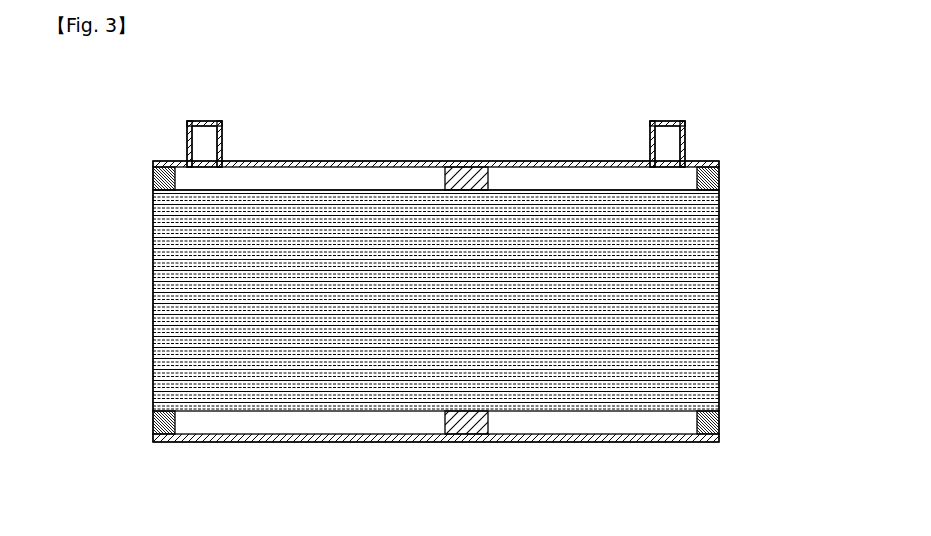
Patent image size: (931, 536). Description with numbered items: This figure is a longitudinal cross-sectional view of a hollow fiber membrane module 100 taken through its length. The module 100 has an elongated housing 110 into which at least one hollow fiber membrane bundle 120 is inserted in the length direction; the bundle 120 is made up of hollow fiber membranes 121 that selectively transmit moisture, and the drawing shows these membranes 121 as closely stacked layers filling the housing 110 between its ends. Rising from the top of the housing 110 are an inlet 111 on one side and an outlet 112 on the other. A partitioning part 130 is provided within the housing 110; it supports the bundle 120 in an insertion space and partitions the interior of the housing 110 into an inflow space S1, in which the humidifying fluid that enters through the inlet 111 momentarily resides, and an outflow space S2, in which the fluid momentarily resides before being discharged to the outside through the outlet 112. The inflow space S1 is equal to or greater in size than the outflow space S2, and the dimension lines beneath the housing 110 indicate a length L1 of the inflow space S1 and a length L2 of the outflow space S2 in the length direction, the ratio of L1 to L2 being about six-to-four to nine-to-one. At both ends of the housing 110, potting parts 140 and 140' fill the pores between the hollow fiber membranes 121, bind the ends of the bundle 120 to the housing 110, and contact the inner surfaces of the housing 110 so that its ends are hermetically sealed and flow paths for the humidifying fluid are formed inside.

The hollow fiber membrane module 100 is at (553, 138).
The housing 110 is at (372, 160).
The inlet 111 is at (188, 140).
The outlet 112 is at (685, 140).
The hollow fiber membrane bundle 120 is at (284, 188).
The hollow fiber membranes 121 is at (320, 190).
The partitioning part 130 is at (470, 178).
The potting part 140 is at (141, 283).
The potting part 140' is at (737, 284).
The inflow space S1 is at (415, 175).
The outflow space S2 is at (597, 165).
The length of the inflow space L1 is at (445, 444).
The length of the outflow space L2 is at (697, 444).